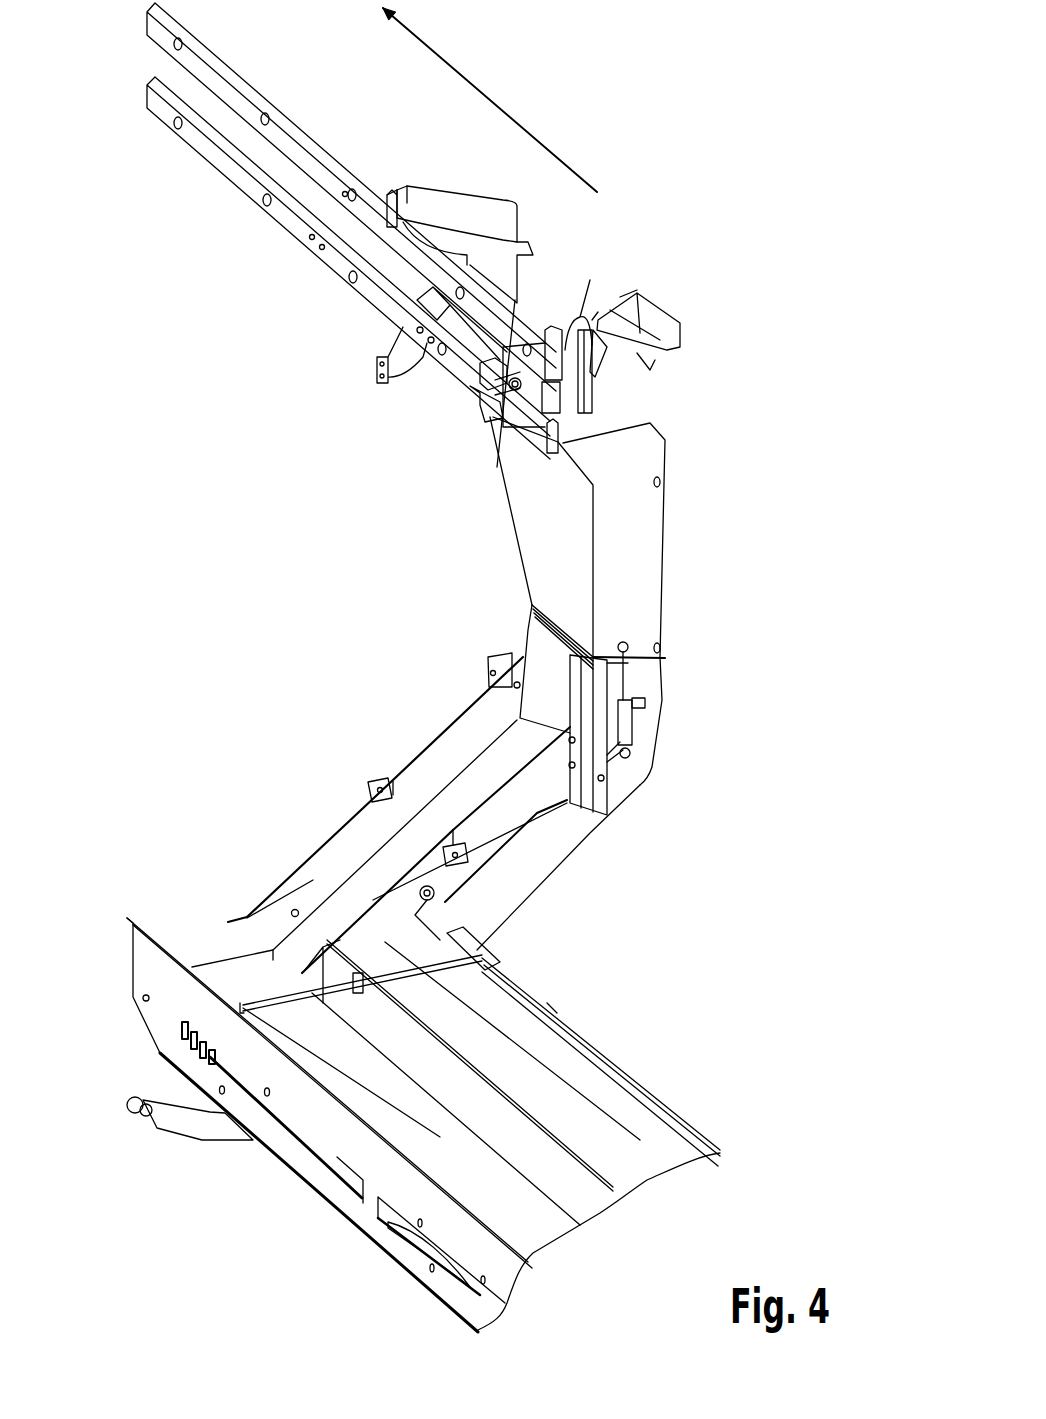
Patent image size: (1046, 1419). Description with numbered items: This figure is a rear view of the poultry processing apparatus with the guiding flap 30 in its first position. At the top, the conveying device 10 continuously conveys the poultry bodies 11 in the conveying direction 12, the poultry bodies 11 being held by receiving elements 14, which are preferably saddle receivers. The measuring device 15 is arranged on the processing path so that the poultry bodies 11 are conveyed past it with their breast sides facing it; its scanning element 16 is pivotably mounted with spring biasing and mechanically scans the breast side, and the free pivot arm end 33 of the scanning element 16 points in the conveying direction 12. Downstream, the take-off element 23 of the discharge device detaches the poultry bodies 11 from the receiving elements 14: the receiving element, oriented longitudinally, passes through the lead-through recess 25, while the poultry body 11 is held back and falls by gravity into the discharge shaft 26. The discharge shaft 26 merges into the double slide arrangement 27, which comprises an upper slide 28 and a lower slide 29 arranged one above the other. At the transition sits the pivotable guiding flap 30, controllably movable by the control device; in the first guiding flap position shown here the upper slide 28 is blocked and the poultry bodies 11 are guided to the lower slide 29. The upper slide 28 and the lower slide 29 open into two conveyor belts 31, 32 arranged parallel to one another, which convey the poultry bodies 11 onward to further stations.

The conveying device 10 is at (182, 197).
The conveying direction 12 is at (462, 74).
The poultry bodies 11 is at (600, 330).
The receiving elements 14 is at (577, 392).
The measuring device 15 is at (685, 298).
The scanning element 16 is at (637, 327).
The take-off element 23 is at (428, 203).
The lead-through recess 25 is at (453, 252).
The discharge shaft 26 is at (648, 552).
The double slide arrangement 27 is at (578, 884).
The upper slide 28 is at (377, 867).
The lower slide 29 is at (523, 877).
The guiding flap 30 is at (543, 692).
The conveyor belt 31 is at (563, 1100).
The conveyor belt 32 is at (410, 1140).
The free pivot arm end 33 is at (603, 320).